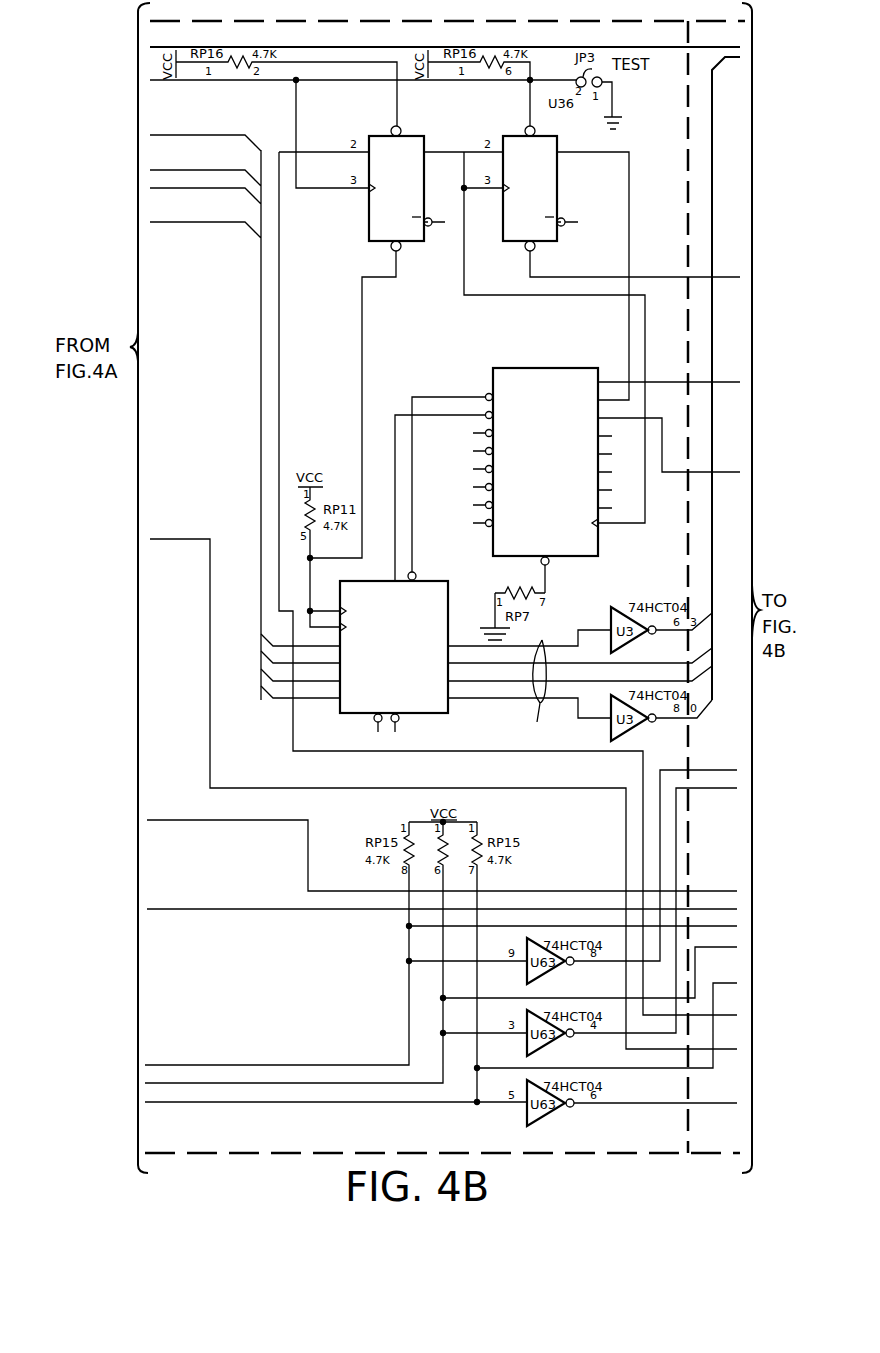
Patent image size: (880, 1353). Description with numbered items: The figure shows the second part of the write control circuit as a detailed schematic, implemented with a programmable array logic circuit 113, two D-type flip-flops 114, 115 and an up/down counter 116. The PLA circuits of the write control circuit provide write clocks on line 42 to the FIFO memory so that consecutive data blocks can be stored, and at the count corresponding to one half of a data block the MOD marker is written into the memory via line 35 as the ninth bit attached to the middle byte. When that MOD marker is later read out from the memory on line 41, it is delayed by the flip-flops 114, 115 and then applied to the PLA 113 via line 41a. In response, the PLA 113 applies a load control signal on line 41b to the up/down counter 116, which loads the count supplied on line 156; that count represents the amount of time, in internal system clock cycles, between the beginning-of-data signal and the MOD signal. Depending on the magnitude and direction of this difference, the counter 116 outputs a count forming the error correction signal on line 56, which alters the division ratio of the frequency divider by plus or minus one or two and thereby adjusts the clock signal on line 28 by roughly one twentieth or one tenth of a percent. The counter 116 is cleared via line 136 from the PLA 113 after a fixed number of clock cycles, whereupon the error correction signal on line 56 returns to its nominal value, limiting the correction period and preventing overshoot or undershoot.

The clock signal line 28 is at (166, 82).
The MOD marker write line 35 is at (178, 539).
The MOD marker read-out line 41 is at (307, 152).
The delayed MOD signal line 41a is at (612, 155).
The load control signal line 41b is at (427, 397).
The write clock line 42 is at (190, 1100).
The error correction signal line 56 is at (580, 685).
The programmable array logic circuit 113 is at (555, 373).
The D-type flip-flop 114 is at (369, 211).
The D-type flip-flop 115 is at (548, 198).
The up/down counter 116 is at (420, 705).
The clear signal line 136 is at (396, 415).
The count input line 156 is at (261, 300).